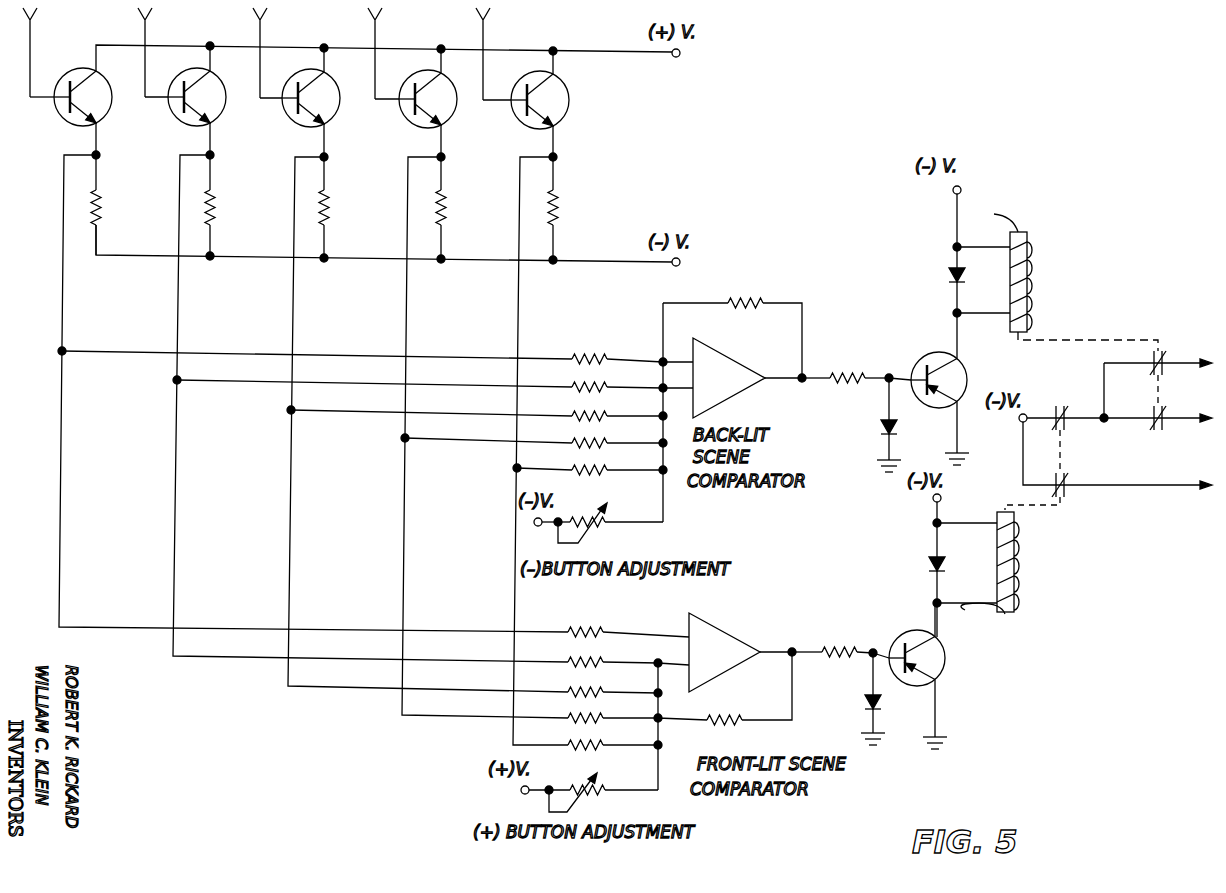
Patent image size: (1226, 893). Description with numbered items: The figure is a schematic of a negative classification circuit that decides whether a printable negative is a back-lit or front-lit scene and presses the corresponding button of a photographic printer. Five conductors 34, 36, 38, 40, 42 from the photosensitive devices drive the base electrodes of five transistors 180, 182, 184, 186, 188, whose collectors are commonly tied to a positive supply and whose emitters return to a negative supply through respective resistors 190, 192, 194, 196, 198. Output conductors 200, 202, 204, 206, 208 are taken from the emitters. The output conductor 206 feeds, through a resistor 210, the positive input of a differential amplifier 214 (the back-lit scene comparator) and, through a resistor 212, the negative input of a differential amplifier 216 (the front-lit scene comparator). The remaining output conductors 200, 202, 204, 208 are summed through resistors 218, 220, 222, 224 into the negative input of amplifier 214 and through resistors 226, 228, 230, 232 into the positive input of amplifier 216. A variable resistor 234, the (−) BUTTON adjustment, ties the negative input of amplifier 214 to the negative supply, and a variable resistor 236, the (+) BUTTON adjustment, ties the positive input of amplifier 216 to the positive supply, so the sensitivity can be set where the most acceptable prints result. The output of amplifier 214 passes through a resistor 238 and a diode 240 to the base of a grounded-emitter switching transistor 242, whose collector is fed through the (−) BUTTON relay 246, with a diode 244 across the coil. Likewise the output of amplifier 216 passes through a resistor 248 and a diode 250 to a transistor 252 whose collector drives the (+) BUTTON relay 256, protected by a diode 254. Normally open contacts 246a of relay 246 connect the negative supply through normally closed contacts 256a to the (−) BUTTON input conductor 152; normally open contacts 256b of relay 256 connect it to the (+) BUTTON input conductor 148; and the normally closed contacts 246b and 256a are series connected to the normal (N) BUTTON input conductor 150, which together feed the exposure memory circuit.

The conductor 40 is at (36, 33).
The conductor 34 is at (150, 33).
The conductor 36 is at (264, 33).
The conductor 38 is at (379, 33).
The conductor 42 is at (487, 33).
The transistor 186 is at (60, 124).
The transistor 180 is at (174, 124).
The transistor 182 is at (288, 126).
The transistor 184 is at (406, 128).
The transistor 188 is at (518, 130).
The resistor 196 is at (99, 210).
The resistor 190 is at (214, 210).
The resistor 192 is at (328, 213).
The resistor 194 is at (445, 213).
The resistor 198 is at (562, 214).
The output conductor 206 is at (65, 306).
The output conductor 200 is at (181, 306).
The output conductor 202 is at (295, 308).
The output conductor 204 is at (409, 310).
The output conductor 208 is at (521, 312).
The resistor 210 is at (596, 353).
The resistor 218 is at (599, 381).
The resistor 220 is at (599, 409).
The resistor 222 is at (599, 436).
The resistor 224 is at (599, 463).
The differential amplifier 214 is at (740, 356).
The variable resistor 234 is at (588, 510).
The resistor 238 is at (847, 375).
The switching transistor 242 is at (922, 357).
The diode 240 is at (878, 440).
The diode 244 is at (927, 270).
The (−) BUTTON relay 246 is at (1030, 297).
The normally open relay contacts 246a is at (1145, 350).
The normally closed relay contacts 246b is at (1145, 407).
The (−) BUTTON input conductor 152 is at (1166, 352).
The (N) BUTTON input conductor 150 is at (1166, 432).
The (+) BUTTON input conductor 148 is at (1195, 493).
The normally closed relay contacts 256a is at (1068, 428).
The normally open relay contacts 256b is at (1068, 494).
The (+) BUTTON relay 256 is at (1016, 562).
The diode 254 is at (925, 557).
The transistor 252 is at (920, 635).
The resistor 212 is at (601, 629).
The resistor 226 is at (597, 657).
The resistor 228 is at (597, 687).
The resistor 230 is at (597, 714).
The resistor 232 is at (597, 741).
The variable resistor 236 is at (603, 788).
The differential amplifier 216 is at (728, 629).
The resistor 248 is at (825, 645).
The diode 250 is at (863, 704).